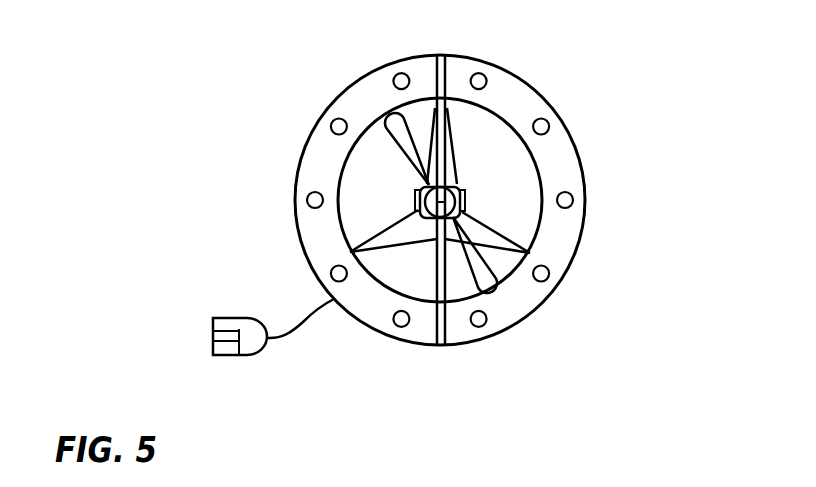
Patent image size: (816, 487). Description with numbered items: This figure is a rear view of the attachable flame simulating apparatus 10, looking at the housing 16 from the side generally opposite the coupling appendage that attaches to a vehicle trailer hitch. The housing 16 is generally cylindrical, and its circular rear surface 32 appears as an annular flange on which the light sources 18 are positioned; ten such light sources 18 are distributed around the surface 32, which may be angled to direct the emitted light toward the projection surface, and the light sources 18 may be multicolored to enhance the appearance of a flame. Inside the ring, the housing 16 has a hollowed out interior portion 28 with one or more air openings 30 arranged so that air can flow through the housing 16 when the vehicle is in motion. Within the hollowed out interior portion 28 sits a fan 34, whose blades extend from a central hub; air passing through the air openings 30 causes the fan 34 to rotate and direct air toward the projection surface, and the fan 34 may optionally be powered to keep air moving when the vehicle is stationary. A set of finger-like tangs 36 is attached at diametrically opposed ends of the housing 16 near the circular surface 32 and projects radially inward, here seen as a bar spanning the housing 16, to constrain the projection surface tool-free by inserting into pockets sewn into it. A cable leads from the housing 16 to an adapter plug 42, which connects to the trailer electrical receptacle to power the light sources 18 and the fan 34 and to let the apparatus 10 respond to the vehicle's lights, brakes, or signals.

The attachable flame simulating apparatus 10 is at (186, 39).
The housing 16 is at (543, 97).
The light sources 18 is at (393, 318).
The hollowed out interior portion 28 is at (522, 182).
The air openings 30 is at (384, 190).
The circular rear surface 32 is at (558, 230).
The fan 34 is at (475, 255).
The tangs 36 is at (448, 60).
The adapter plug 42 is at (254, 341).